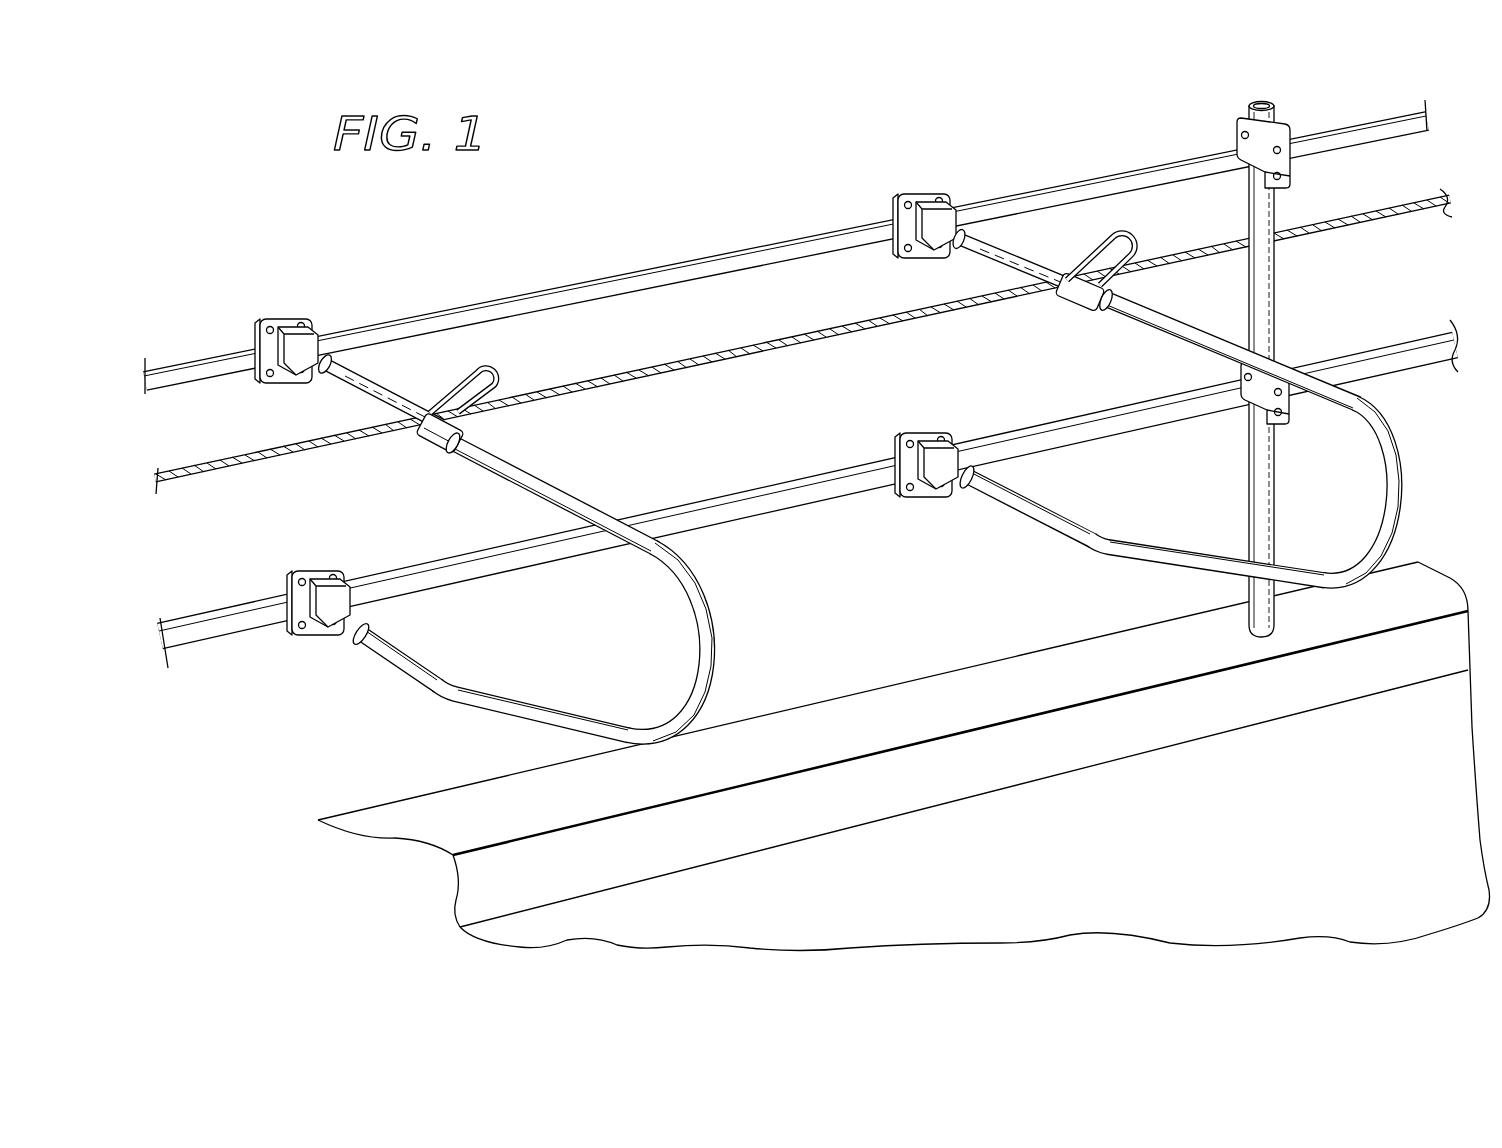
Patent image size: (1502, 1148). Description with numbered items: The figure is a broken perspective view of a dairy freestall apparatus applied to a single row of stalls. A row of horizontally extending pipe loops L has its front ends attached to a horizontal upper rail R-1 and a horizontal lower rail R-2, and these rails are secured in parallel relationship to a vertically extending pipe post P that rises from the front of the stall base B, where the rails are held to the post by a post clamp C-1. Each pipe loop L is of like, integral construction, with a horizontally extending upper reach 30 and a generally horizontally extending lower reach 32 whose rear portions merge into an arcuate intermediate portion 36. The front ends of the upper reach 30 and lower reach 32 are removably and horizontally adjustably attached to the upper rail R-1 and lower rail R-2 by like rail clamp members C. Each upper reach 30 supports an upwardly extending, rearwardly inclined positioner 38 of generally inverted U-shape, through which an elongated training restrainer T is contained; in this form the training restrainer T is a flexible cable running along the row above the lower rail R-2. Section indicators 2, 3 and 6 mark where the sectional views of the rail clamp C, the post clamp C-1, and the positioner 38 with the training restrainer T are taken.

The upper rail R-1 is at (182, 378).
The lower rail R-2 is at (200, 628).
The training restrainer T is at (688, 364).
The pipe post P is at (1271, 318).
The rail clamp member C is at (262, 332).
The post clamp C-1 is at (1234, 124).
The pipe loop L is at (390, 668).
The upper reach 30 is at (600, 516).
The lower reach 32 is at (529, 702).
The arcuate intermediate portion 36 is at (716, 639).
The positioner 38 is at (480, 384).
The stall base B is at (904, 756).
The section line 2- 2 is at (826, 178).
The section line 3- 3 is at (1197, 163).
The section line 6- 6 is at (395, 388).